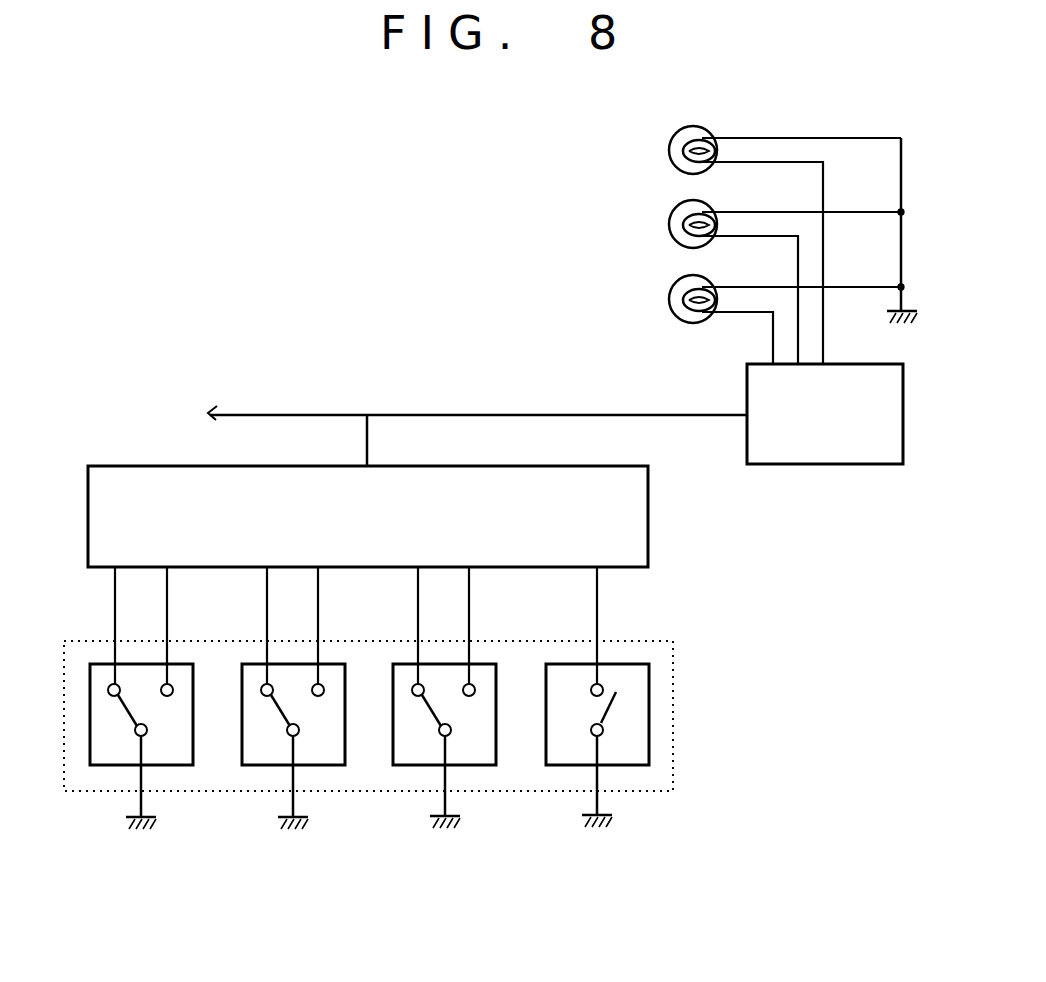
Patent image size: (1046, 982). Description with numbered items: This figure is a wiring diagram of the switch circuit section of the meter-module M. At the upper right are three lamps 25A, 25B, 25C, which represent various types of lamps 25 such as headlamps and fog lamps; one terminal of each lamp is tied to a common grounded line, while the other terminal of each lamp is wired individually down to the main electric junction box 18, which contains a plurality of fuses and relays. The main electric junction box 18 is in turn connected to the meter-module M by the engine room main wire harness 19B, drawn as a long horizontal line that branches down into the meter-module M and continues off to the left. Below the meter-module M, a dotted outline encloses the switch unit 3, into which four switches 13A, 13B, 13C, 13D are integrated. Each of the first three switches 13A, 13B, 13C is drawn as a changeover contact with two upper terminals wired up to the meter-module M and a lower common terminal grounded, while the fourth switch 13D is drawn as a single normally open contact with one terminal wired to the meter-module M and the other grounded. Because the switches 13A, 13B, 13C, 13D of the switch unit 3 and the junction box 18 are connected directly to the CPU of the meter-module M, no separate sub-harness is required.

The lamps 25 is at (374, 204).
The lamp 25A is at (668, 144).
The lamp 25B is at (668, 219).
The lamp 25C is at (668, 295).
The main electric junction box 18 is at (825, 464).
The engine room main wire harness 19B is at (518, 414).
The meter-module M is at (648, 513).
The switch unit 3 is at (673, 680).
The switch 13A is at (117, 765).
The switch 13B is at (269, 765).
The switch 13C is at (420, 765).
The switch 13D is at (573, 765).